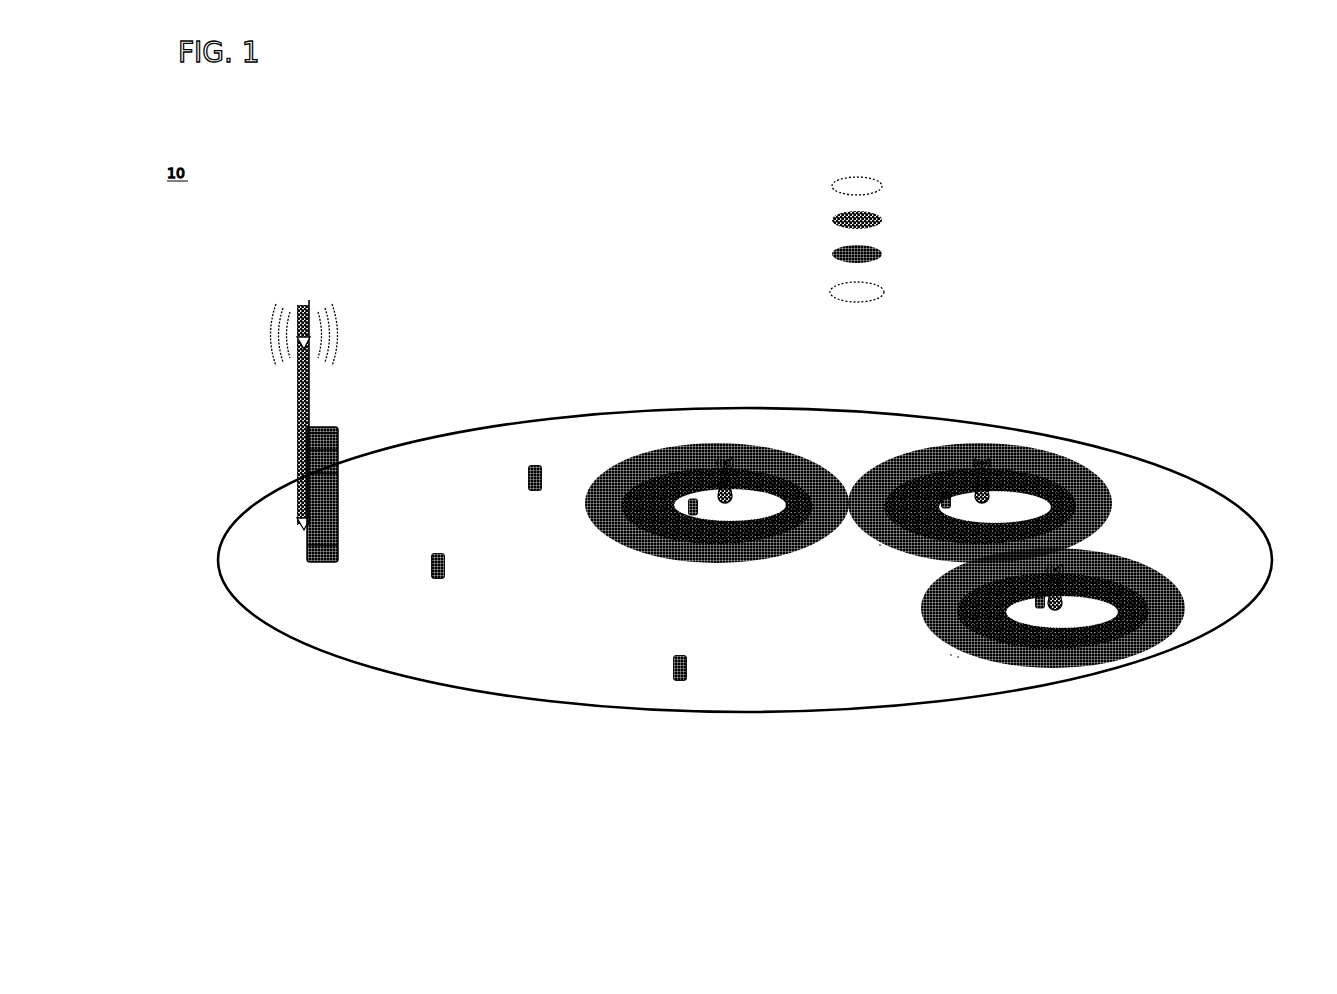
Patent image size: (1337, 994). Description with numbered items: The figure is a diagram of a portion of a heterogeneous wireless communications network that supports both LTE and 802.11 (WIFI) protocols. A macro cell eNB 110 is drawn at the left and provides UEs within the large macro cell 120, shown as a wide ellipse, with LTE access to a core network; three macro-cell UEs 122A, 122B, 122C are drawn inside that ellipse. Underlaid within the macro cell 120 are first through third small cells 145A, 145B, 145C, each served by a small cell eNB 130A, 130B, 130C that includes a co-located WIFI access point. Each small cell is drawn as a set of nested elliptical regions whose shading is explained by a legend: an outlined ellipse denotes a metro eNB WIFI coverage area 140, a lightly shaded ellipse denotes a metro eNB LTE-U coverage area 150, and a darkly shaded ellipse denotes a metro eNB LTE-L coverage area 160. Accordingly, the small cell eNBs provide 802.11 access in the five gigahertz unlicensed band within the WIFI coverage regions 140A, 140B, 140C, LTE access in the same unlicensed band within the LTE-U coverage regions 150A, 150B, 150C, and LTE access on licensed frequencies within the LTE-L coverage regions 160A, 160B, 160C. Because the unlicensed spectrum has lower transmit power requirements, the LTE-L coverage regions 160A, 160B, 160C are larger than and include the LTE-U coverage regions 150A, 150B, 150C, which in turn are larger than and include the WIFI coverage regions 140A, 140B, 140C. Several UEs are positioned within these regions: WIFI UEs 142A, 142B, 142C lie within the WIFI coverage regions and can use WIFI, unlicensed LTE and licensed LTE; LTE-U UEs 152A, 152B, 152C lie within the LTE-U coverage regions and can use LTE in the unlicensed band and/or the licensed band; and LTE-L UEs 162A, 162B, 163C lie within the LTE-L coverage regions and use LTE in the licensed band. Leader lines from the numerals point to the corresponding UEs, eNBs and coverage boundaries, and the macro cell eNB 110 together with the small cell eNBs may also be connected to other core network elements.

The macro cell eNB 110 is at (292, 431).
The macro cell 120 is at (440, 428).
The UE 122A is at (433, 592).
The UE 122B is at (528, 497).
The UE 122C is at (670, 681).
The small cell eNB 130A is at (740, 474).
The small cell eNB 130B is at (992, 478).
The metro eNB 130C is at (1068, 578).
The metro eNB WiFi coverage area 140 is at (1007, 184).
The metro eNB LTE-U coverage area 150 is at (1007, 218).
The metro eNB LTE-L coverage area 160 is at (1007, 252).
The WIFI coverage region 140A is at (730, 505).
The WIFI coverage region 140B is at (995, 507).
The WIFI coverage region 140C is at (1062, 612).
The LTE-U coverage region 150A is at (717, 506).
The LTE-U coverage region 150B is at (980, 506).
The LTE-U coverage region 150C is at (1053, 611).
The LTE-L coverage region 160A is at (717, 503).
The LTE-L coverage region 160B is at (983, 503).
The LTE-L coverage region 160C is at (1053, 608).
The WIFI UE 142A is at (685, 492).
The WIFI UE 142B is at (934, 491).
The WIFI UE 142C is at (1030, 593).
The small cell 145A is at (939, 412).
The small cell 145B is at (939, 443).
The small cell 145C is at (939, 521).
The LTE-U UE 152A is at (953, 658).
The LTE-U UE 152B is at (1043, 533).
The LTE-U UE 152C is at (1012, 637).
The LTE-L UE 162A is at (637, 540).
The LTE-L UE 162B is at (880, 548).
The interference 163C is at (957, 660).